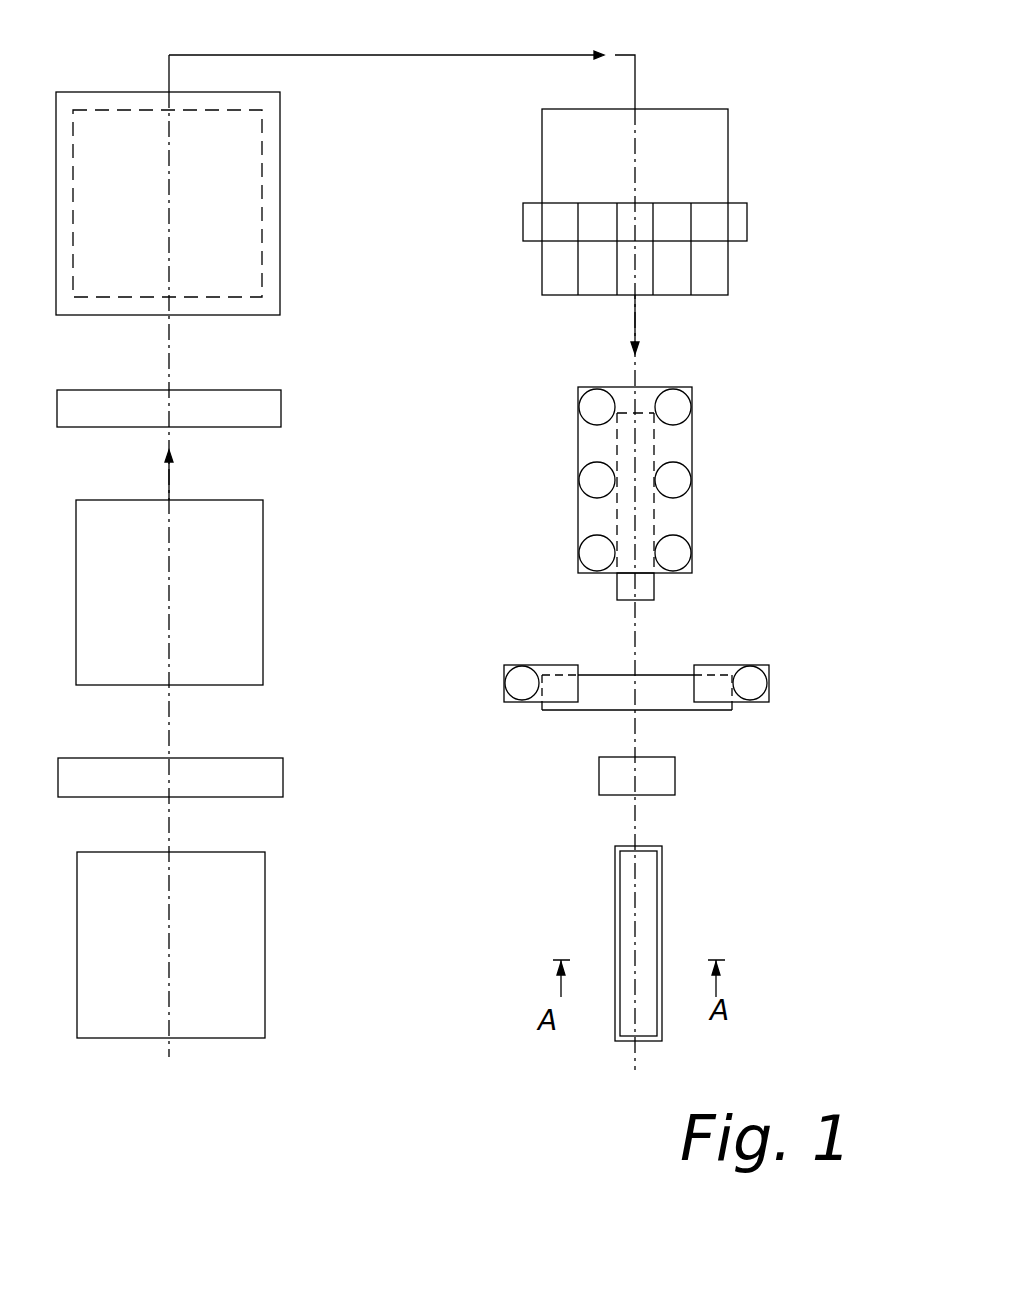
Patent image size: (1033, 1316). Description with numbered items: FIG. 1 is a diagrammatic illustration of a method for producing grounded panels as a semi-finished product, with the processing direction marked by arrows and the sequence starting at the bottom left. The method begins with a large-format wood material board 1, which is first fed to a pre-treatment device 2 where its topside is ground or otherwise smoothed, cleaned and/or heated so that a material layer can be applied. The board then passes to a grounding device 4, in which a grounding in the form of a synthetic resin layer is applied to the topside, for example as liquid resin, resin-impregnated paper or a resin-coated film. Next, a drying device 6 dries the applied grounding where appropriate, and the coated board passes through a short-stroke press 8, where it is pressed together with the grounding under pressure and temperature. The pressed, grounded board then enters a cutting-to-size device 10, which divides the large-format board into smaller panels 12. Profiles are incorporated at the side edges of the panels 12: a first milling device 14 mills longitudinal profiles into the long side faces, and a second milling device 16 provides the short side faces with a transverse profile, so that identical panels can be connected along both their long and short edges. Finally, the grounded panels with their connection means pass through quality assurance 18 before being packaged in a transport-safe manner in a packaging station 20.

The wood material board 1 is at (243, 963).
The pre-treatment device 2 is at (262, 780).
The grounding device 4 is at (233, 582).
The drying device 6 is at (252, 410).
The short-stroke press 8 is at (108, 137).
The cutting-to-size device 10 is at (737, 218).
The panels 12 is at (722, 283).
The first milling device 14 is at (680, 448).
The second milling device 16 is at (757, 678).
The quality assurance 18 is at (663, 783).
The packaging station 20 is at (663, 908).